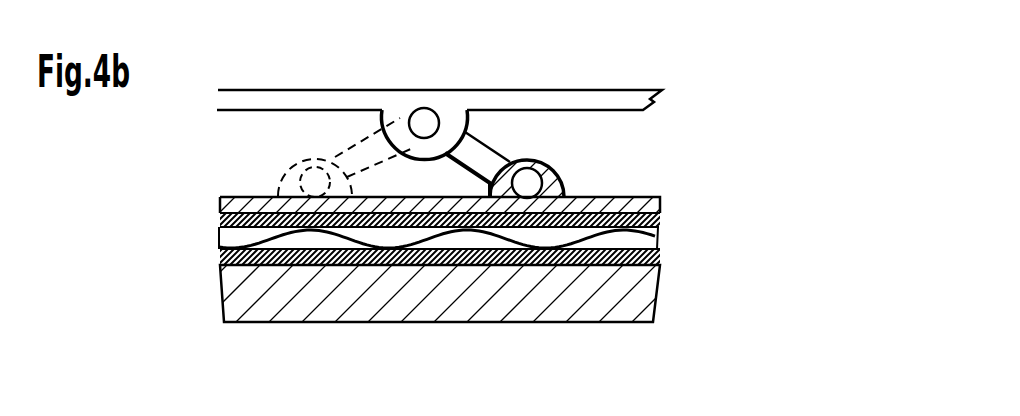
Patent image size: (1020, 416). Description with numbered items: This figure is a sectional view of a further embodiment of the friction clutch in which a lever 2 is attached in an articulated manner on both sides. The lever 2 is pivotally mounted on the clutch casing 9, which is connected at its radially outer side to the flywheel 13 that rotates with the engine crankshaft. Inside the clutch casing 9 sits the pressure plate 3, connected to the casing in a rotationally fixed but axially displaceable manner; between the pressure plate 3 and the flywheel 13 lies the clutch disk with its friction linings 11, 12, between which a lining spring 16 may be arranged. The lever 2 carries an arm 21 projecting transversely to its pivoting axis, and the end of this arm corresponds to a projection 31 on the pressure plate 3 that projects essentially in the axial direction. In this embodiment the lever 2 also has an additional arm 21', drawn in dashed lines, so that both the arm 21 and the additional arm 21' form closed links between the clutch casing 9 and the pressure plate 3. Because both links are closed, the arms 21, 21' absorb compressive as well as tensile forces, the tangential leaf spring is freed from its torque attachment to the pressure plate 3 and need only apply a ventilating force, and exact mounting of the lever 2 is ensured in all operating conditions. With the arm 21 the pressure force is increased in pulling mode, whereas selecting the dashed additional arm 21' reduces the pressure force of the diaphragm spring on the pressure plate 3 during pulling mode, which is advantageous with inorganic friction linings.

The lever 2 is at (427, 117).
The clutch casing 9 is at (625, 98).
The arm 21 is at (497, 112).
The additional arm 21' is at (345, 106).
The projection 31 is at (552, 180).
The pressure plate 3 is at (653, 202).
The friction lining 11 is at (657, 222).
The lining spring 16 is at (655, 247).
The friction lining 12 is at (660, 280).
The flywheel 13 is at (572, 300).